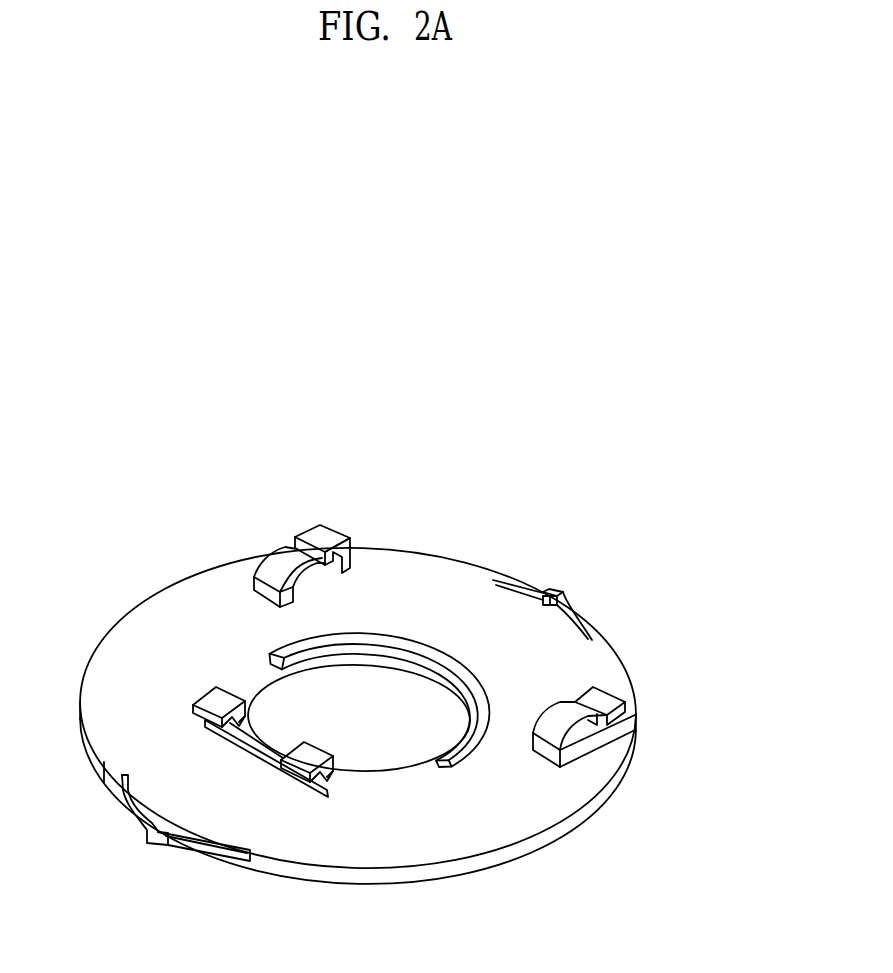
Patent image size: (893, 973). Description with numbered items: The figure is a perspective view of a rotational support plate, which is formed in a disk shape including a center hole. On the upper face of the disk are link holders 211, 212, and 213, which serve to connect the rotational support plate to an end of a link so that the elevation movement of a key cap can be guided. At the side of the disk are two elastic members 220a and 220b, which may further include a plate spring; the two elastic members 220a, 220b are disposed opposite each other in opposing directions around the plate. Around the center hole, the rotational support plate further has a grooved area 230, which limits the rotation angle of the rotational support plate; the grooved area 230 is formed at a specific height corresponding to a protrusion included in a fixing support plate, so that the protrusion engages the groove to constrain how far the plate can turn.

The link holder 211 is at (313, 537).
The link holder 212 is at (604, 698).
The link holder 213 is at (333, 786).
The elastic member 220a is at (140, 816).
The elastic member 220b is at (562, 592).
The grooved area 230 is at (386, 648).